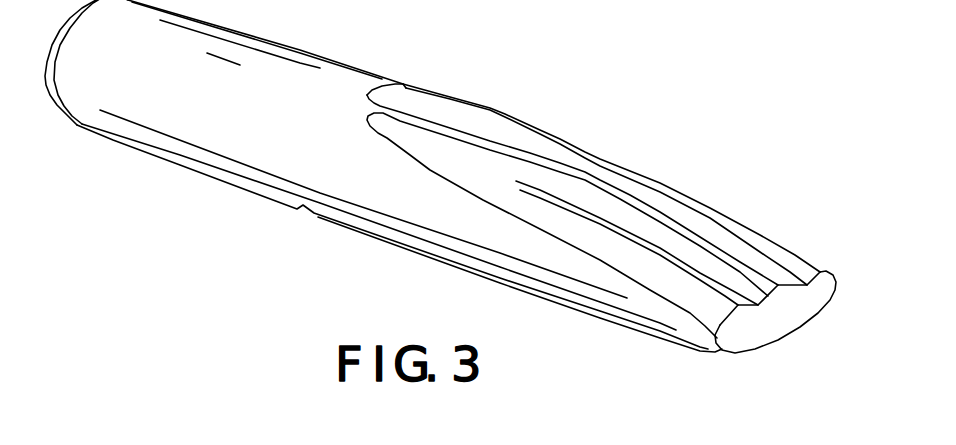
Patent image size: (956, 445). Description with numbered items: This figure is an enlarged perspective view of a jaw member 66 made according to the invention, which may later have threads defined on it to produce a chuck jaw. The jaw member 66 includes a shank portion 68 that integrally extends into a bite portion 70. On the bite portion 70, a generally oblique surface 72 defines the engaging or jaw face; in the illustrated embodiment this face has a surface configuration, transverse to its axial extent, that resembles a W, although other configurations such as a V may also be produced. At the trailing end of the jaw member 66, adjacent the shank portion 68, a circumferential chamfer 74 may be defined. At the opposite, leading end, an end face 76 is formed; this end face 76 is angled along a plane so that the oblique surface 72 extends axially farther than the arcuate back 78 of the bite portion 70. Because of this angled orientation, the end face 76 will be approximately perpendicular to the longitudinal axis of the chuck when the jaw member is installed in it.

The jaw member 66 is at (601, 237).
The shank portion 68 is at (399, 176).
The bite portion 70 is at (363, 214).
The oblique surface 72 is at (606, 186).
The circumferential chamfer 74 is at (86, 94).
The end face 76 is at (769, 344).
The arcuate back 78 is at (775, 336).